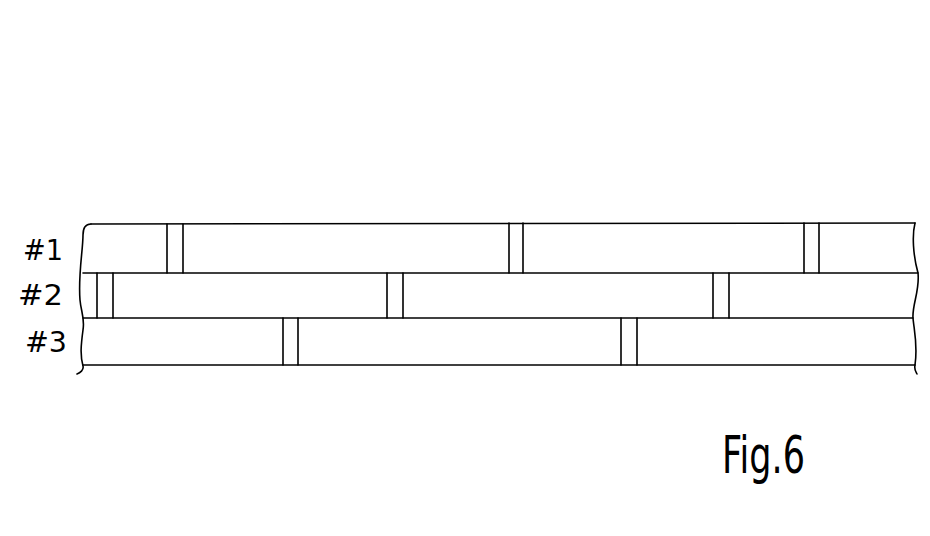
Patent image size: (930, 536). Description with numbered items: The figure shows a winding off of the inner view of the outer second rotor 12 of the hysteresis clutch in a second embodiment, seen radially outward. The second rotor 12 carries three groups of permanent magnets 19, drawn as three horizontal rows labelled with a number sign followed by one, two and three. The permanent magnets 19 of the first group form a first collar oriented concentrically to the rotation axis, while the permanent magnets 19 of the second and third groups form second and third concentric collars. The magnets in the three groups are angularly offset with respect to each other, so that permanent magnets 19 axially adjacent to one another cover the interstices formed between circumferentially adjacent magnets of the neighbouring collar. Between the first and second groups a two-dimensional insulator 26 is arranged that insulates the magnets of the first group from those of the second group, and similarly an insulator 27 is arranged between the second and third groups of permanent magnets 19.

The second rotor 12 is at (486, 132).
The permanent magnets 19 is at (490, 198).
The two-dimensional insulator 26 is at (439, 245).
The insulator 27 is at (430, 318).